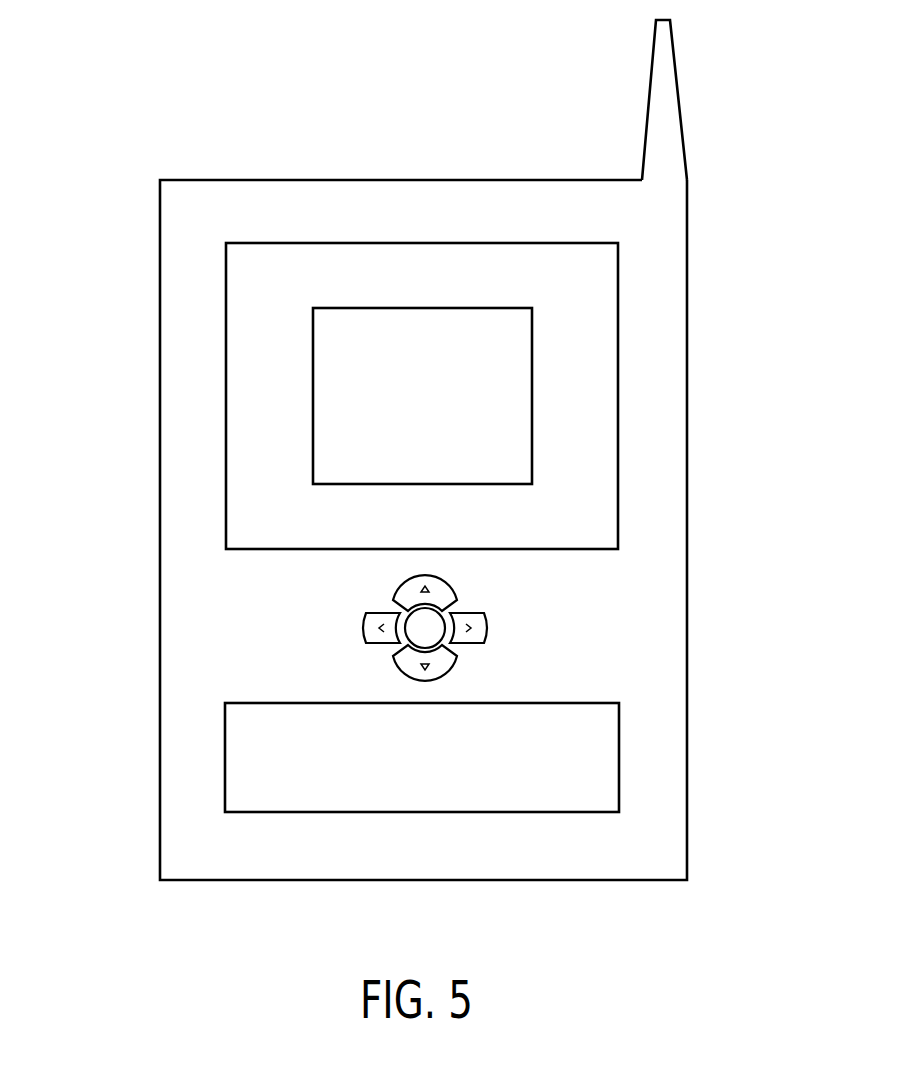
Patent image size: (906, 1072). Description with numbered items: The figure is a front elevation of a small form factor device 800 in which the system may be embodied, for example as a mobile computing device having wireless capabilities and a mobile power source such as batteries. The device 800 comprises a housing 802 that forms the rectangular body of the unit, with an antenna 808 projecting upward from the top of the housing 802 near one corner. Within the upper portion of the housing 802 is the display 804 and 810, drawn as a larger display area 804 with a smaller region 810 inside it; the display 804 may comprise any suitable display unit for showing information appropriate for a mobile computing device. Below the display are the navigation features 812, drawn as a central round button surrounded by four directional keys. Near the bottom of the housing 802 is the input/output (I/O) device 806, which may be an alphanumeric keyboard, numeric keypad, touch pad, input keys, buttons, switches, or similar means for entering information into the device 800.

The small form factor device 800 is at (405, 450).
The housing 802 is at (160, 617).
The display 804 is at (618, 300).
The input/output (I/O) device 806 is at (619, 757).
The antenna 808 is at (650, 98).
The display 810 is at (424, 308).
The navigation features 812 is at (520, 629).